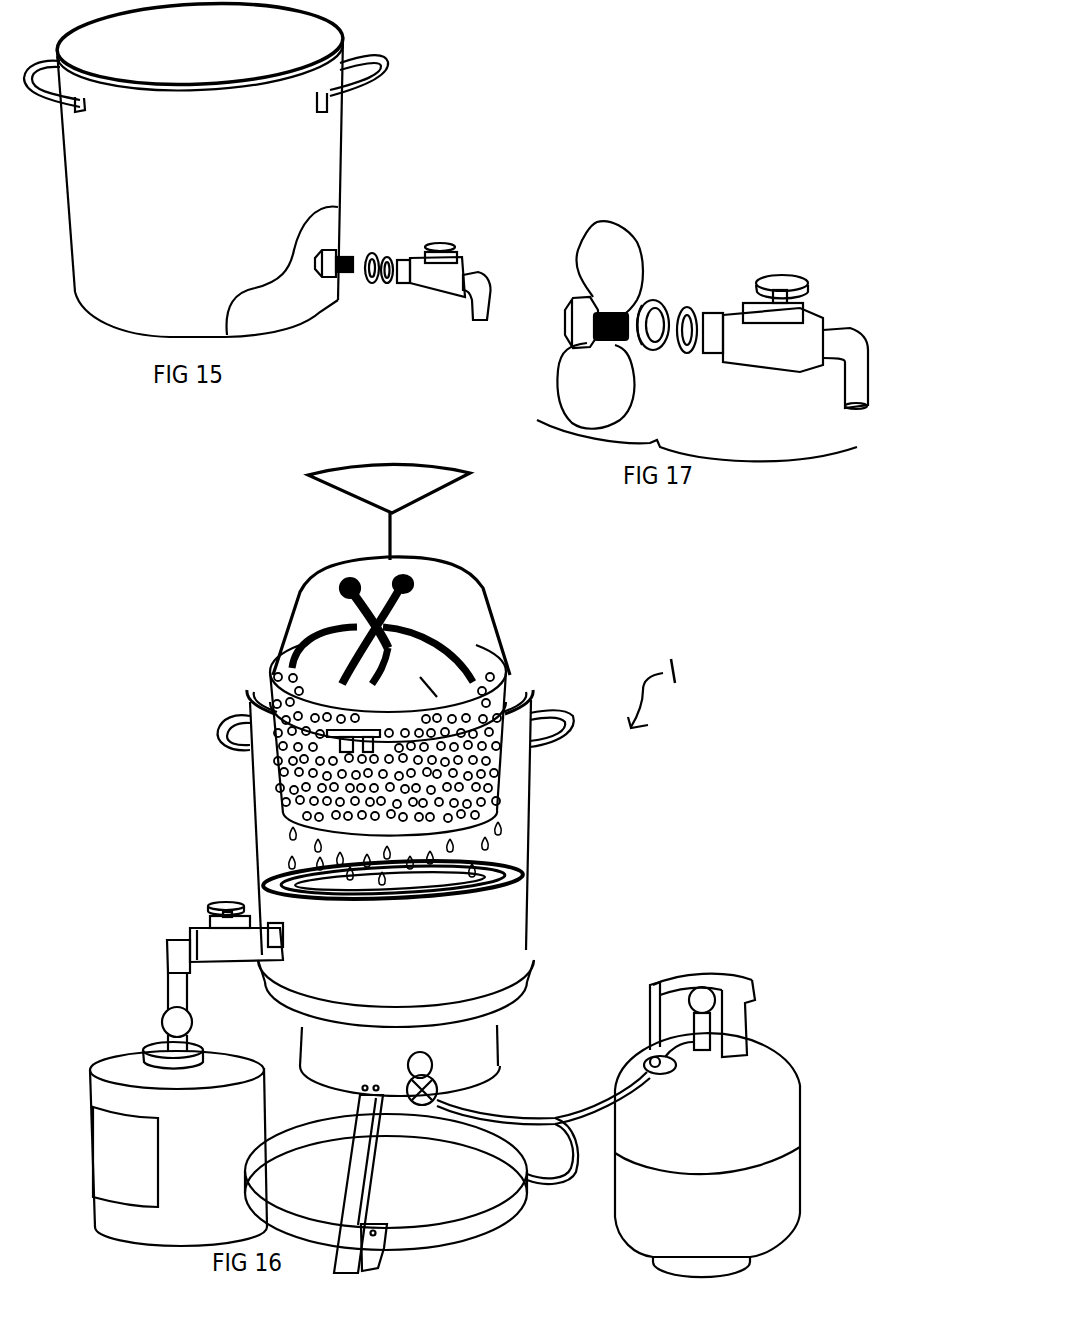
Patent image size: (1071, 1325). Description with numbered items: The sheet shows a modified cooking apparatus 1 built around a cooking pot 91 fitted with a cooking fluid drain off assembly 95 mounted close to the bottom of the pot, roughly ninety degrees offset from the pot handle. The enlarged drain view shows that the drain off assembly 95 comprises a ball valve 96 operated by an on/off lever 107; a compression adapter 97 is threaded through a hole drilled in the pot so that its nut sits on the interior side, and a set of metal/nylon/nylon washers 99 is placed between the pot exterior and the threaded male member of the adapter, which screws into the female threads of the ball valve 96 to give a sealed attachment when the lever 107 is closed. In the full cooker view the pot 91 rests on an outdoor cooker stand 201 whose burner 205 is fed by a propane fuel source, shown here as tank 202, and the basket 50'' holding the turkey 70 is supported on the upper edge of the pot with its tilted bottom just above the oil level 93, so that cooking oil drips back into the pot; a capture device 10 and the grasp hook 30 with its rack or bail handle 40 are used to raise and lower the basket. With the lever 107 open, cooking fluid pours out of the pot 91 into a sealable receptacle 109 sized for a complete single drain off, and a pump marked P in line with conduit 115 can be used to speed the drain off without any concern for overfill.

In FIG. 16, the cooking apparatus 1 is at (651, 693).
In FIG. 16, the capture device 10 is at (250, 697).
In FIG. 16, the grasp hook 30 is at (393, 531).
In FIG. 16, the lifting rack 40 is at (490, 600).
In FIG. 16, the basket 50'' is at (434, 740).
In FIG. 16, the turkey 70 is at (340, 640).
In FIG. 15, the cooking pot 91 is at (292, 167).
In FIG. 17, the cooking pot 91 is at (627, 255).
In FIG. 16, the cooking pot 91 is at (420, 917).
In FIG. 16, the oil level 93 is at (433, 882).
In FIG. 15, the drain off assembly 95 is at (462, 265).
In FIG. 17, the drain off assembly 95 is at (736, 308).
In FIG. 16, the drain off assembly 95 is at (197, 930).
In FIG. 17, the ball valve 96 is at (787, 357).
In FIG. 17, the compression adapter 97 is at (580, 301).
In FIG. 17, the washers 99 is at (700, 312).
In FIG. 17, the on/off lever 107 is at (790, 280).
In FIG. 16, the on/off lever 107 is at (228, 903).
In FIG. 16, the sealable receptacle 109 is at (120, 1068).
In FIG. 16, the conduit 115 is at (173, 992).
In FIG. 16, the cooker stand 201 is at (472, 1050).
In FIG. 16, the propane tank 202 is at (747, 1110).
In FIG. 16, the burner 205 is at (408, 1110).